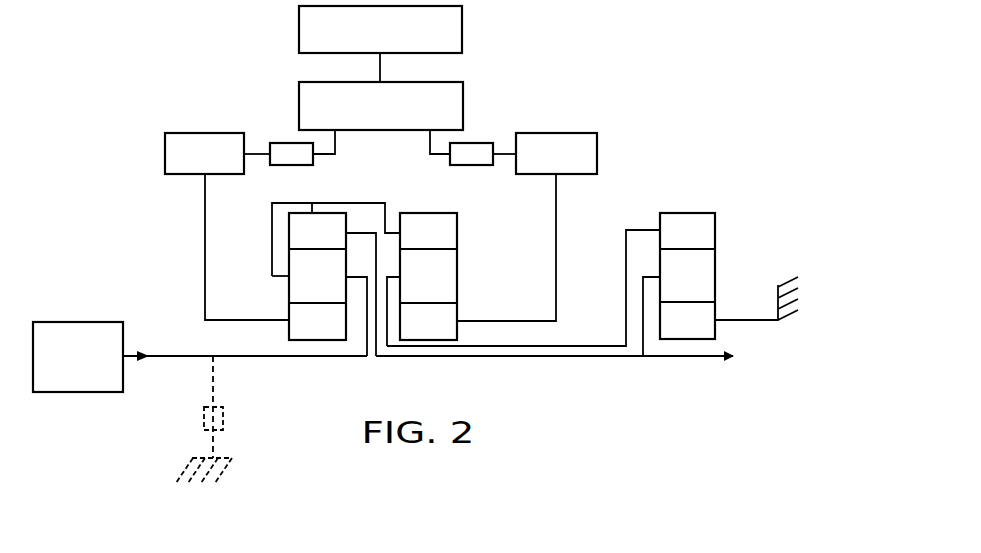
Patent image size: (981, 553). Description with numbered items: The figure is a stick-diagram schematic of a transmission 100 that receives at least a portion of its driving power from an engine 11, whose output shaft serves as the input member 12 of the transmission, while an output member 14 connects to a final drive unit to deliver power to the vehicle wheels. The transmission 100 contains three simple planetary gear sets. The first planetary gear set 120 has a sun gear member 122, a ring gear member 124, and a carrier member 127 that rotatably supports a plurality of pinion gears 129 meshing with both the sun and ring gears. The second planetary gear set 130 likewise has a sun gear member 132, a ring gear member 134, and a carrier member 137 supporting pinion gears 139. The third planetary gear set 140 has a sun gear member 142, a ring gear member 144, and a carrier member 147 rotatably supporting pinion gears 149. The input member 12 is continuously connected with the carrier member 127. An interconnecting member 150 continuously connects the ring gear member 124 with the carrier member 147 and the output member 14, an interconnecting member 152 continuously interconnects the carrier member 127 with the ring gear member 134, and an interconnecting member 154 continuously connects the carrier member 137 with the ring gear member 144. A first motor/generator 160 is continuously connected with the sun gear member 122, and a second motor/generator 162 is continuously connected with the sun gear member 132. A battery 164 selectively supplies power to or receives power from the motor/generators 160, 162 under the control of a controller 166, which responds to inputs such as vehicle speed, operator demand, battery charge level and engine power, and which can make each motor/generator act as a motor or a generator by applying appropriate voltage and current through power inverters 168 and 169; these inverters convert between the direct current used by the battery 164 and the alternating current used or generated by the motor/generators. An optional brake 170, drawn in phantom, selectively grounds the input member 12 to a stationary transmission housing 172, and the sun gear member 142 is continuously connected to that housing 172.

The transmission 100 is at (661, 75).
The engine 11 is at (80, 392).
The input member 12 is at (172, 356).
The output member 14 is at (708, 358).
The first planetary gear set 120 is at (312, 285).
The sun gear member 122 is at (289, 329).
The ring gear member 124 is at (312, 205).
The carrier member 127 is at (272, 278).
The pinion gears 129 is at (289, 296).
The second planetary gear set 130 is at (457, 302).
The sun gear member 132 is at (458, 312).
The ring gear member 134 is at (457, 235).
The carrier member 137 is at (388, 270).
The pinion gears 139 is at (457, 275).
The third planetary gear set 140 is at (702, 312).
The sun gear member 142 is at (715, 310).
The ring gear member 144 is at (715, 235).
The carrier member 147 is at (650, 272).
The pinion gears 149 is at (715, 275).
The interconnecting member 150 is at (568, 358).
The interconnecting member 152 is at (353, 202).
The interconnecting member 154 is at (578, 345).
The first motor/generator 160 is at (165, 155).
The second motor/generator 162 is at (572, 133).
The battery 164 is at (299, 29).
The controller 166 is at (463, 101).
The power inverter 168 is at (284, 143).
The power inverter 169 is at (458, 165).
The brake 170 is at (236, 423).
The transmission housing 172 is at (213, 483).